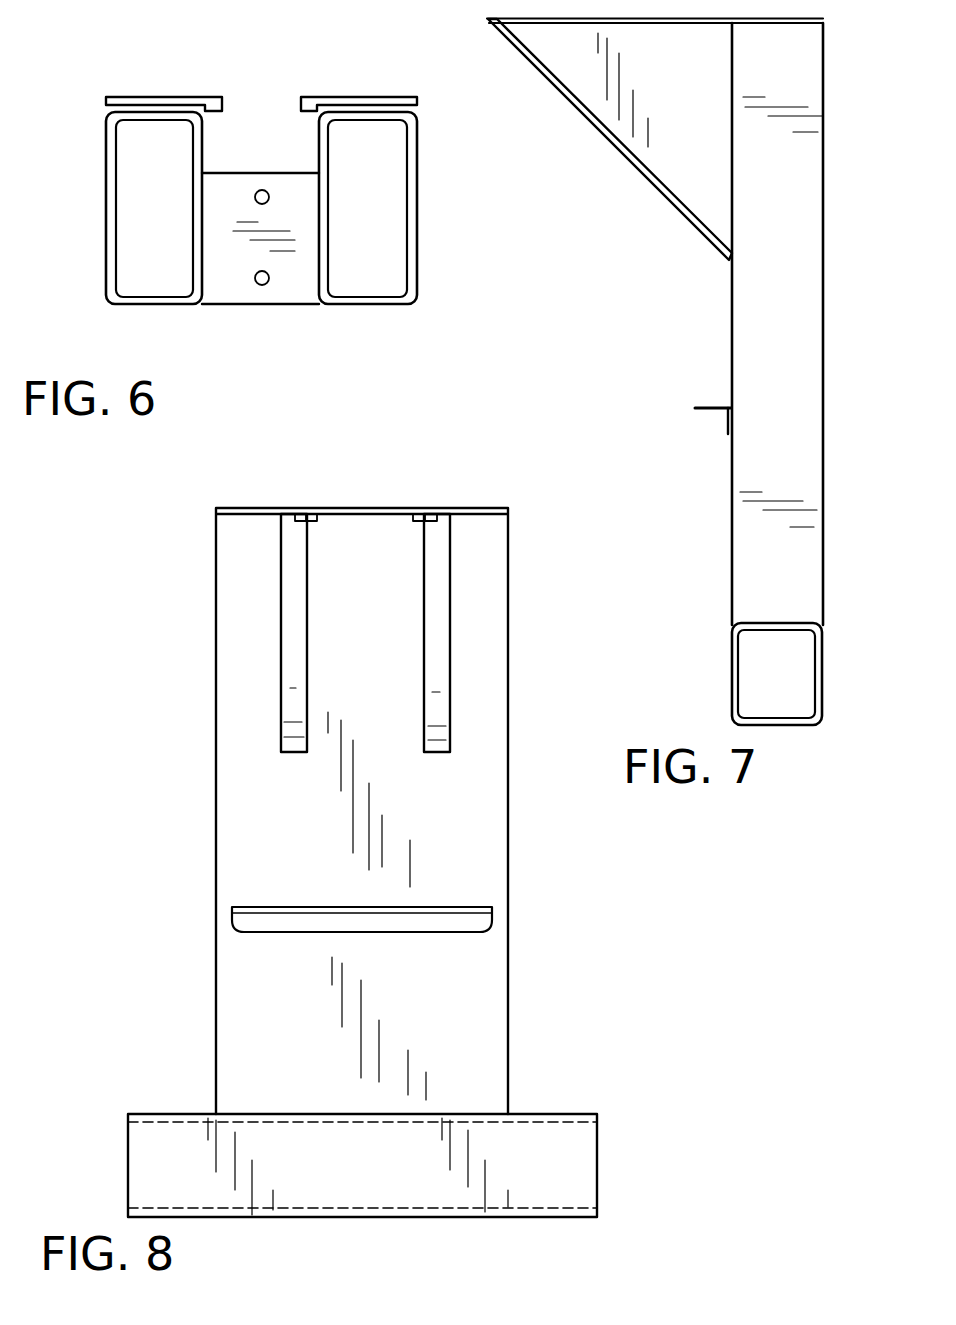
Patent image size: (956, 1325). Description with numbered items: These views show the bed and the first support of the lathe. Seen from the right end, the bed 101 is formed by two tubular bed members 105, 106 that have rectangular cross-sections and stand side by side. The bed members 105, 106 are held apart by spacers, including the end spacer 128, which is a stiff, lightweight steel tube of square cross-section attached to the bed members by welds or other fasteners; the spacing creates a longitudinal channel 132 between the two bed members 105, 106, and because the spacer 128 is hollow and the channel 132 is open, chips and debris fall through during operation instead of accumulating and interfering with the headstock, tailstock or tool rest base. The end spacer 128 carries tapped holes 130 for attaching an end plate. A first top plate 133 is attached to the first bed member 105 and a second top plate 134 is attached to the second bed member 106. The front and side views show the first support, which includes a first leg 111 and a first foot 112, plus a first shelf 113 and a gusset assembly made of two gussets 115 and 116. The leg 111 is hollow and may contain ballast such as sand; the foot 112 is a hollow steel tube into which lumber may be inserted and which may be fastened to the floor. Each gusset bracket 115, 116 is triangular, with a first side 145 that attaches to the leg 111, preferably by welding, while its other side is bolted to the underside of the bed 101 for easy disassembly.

In FIG. 6, the bed 101 is at (427, 177).
In FIG. 6, the first bed member 105 is at (115, 200).
In FIG. 6, the second bed member 106 is at (413, 219).
In FIG. 6, the end spacer 128 is at (220, 185).
In FIG. 6, the tapped holes 130 is at (257, 207).
In FIG. 6, the channel 132 is at (230, 118).
In FIG. 6, the first top plate 133 is at (122, 102).
In FIG. 6, the second top plate 134 is at (343, 102).
In FIG. 7, the first leg 111 is at (807, 364).
In FIG. 8, the first leg 111 is at (242, 810).
In FIG. 7, the first foot 112 is at (727, 674).
In FIG. 8, the first foot 112 is at (585, 1168).
In FIG. 7, the first shelf 113 is at (717, 411).
In FIG. 8, the first shelf 113 is at (482, 918).
In FIG. 7, the first gusset bracket 115 is at (608, 141).
In FIG. 8, the first gusset bracket 115 is at (440, 668).
In FIG. 8, the first gusset bracket 116 is at (293, 673).
In FIG. 8, the first side 145 is at (292, 593).